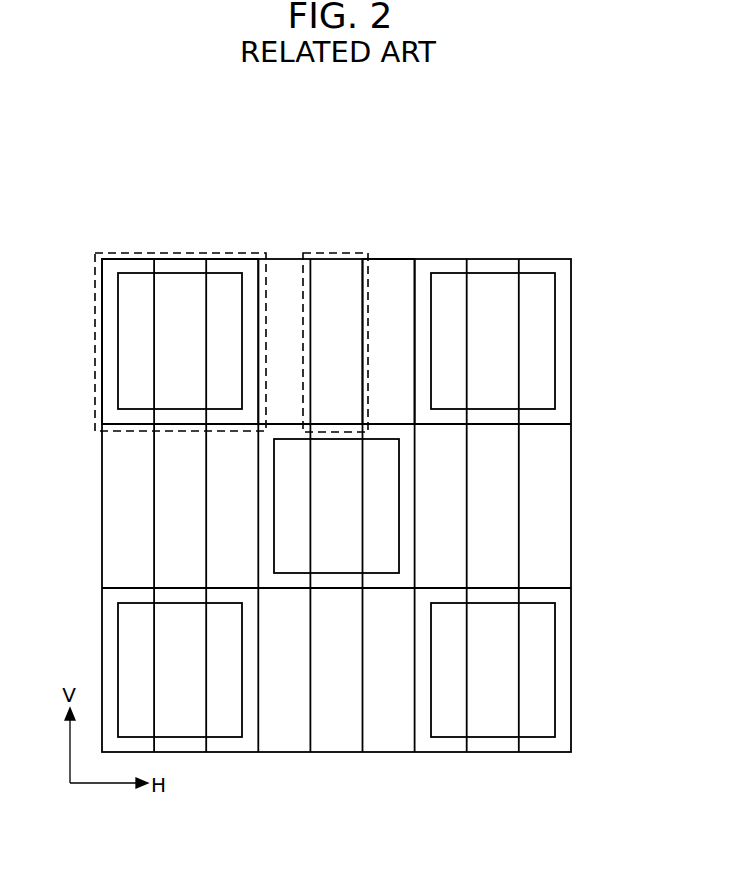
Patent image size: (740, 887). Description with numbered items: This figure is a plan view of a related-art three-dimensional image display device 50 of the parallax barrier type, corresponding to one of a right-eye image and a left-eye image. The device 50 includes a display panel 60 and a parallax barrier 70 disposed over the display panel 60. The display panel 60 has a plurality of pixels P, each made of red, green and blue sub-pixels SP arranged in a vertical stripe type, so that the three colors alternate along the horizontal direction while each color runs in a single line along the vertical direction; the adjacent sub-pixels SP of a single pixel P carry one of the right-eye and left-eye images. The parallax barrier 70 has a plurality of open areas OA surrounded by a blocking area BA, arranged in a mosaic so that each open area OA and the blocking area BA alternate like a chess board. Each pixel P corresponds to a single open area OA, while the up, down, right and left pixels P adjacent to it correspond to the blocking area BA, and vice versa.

The three-dimensional image display device 50 is at (513, 206).
The parallax barrier 70 is at (408, 160).
The display panel 60 is at (252, 170).
The open area OA is at (143, 258).
The pixel P is at (222, 253).
The sub-pixel SP is at (332, 253).
The blocking area BA is at (384, 264).